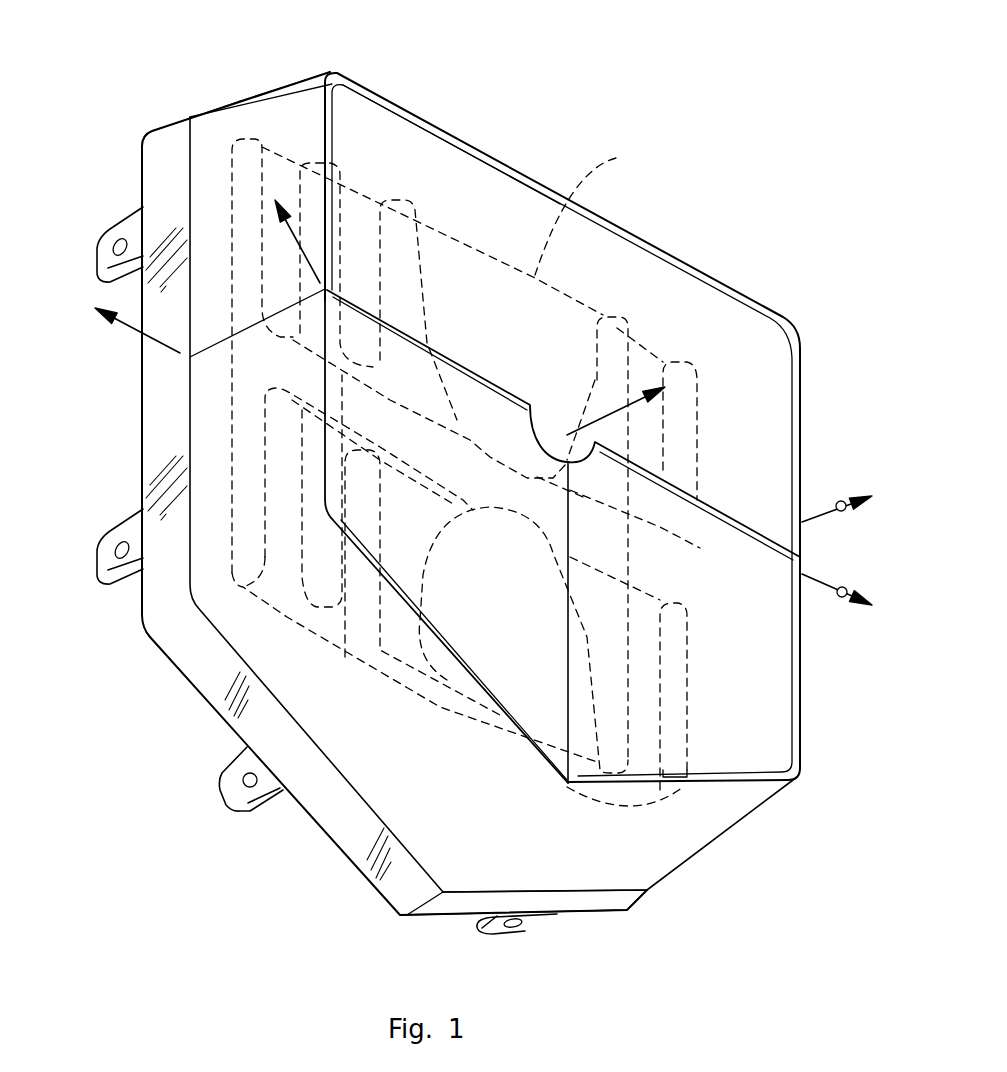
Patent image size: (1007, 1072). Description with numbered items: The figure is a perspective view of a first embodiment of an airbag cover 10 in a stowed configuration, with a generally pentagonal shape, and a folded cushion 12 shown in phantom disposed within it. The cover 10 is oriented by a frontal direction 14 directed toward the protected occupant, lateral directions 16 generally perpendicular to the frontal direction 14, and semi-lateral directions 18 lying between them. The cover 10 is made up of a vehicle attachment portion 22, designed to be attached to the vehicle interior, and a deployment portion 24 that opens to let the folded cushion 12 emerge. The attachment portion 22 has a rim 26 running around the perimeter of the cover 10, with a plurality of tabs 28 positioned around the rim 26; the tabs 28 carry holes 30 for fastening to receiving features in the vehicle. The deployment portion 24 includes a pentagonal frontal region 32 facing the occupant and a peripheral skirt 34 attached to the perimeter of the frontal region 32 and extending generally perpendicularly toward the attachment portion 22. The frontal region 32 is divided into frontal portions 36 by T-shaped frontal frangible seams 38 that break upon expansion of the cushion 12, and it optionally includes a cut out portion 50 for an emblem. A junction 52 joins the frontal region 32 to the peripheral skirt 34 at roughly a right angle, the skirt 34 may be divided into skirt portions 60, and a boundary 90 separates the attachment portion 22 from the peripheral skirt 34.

The airbag cover 10 is at (92, 128).
The folded cushion 12 is at (589, 208).
The frontal direction 14 is at (612, 410).
The lateral directions 16 is at (128, 328).
The semi-lateral directions 18 is at (300, 237).
The vehicle attachment portion 22 is at (172, 130).
The deployment portion 24 is at (243, 103).
The rim 26 is at (152, 178).
The tabs 28 is at (100, 253).
The holes 30 is at (115, 258).
The frontal region 32 is at (465, 165).
The peripheral skirt 34 is at (300, 90).
The frontal portions 36 is at (740, 310).
The frontal frangible seams 38 is at (492, 380).
The cut out portion 50 is at (547, 439).
The junction 52 is at (460, 675).
The skirt portions 60 is at (190, 225).
The boundary 90 is at (218, 635).